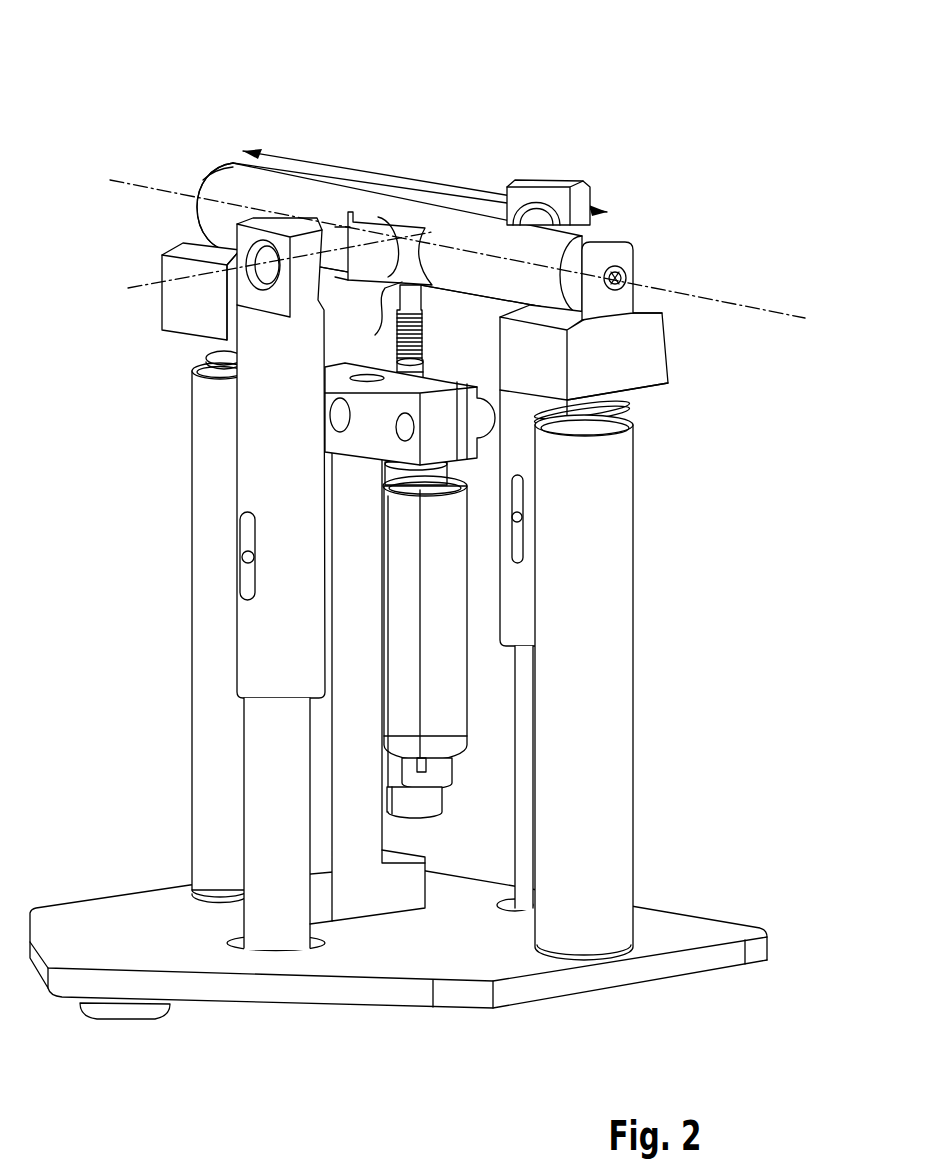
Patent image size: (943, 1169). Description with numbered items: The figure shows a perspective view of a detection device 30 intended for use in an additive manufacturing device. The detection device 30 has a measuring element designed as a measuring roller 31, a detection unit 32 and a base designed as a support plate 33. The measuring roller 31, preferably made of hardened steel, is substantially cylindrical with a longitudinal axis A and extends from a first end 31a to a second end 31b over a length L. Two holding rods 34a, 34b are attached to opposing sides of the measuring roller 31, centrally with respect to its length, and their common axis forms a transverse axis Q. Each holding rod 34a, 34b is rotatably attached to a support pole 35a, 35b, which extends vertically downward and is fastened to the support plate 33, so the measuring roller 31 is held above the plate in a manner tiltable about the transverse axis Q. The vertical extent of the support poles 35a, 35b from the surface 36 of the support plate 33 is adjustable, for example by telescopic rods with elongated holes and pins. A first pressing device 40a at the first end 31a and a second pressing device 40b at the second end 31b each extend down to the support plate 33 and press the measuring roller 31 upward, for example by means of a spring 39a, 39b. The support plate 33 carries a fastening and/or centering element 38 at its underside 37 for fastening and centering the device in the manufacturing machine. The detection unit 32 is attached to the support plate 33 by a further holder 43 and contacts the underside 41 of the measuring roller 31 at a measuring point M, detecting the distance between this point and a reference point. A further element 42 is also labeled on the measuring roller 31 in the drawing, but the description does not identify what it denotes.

The detection device 30 is at (150, 160).
The measuring roller 31 is at (466, 237).
The first end 31a is at (220, 163).
The second end 31b is at (598, 226).
The detection unit 32 is at (396, 638).
The support plate 33 is at (755, 955).
The holding rod 34a is at (338, 240).
The holding rod 34b is at (540, 185).
The support pole 35a is at (262, 469).
The support pole 35b is at (523, 458).
The surface 36 is at (133, 927).
The underside 37 is at (238, 1003).
The fastening and/or centering element 38 is at (104, 1008).
The spring 39a is at (233, 360).
The spring 39b is at (627, 404).
The first pressing device 40a is at (225, 725).
The second pressing device 40b is at (590, 602).
The underside 41 is at (430, 288).
The carriage block 42 is at (408, 196).
The further holder 43 is at (360, 822).